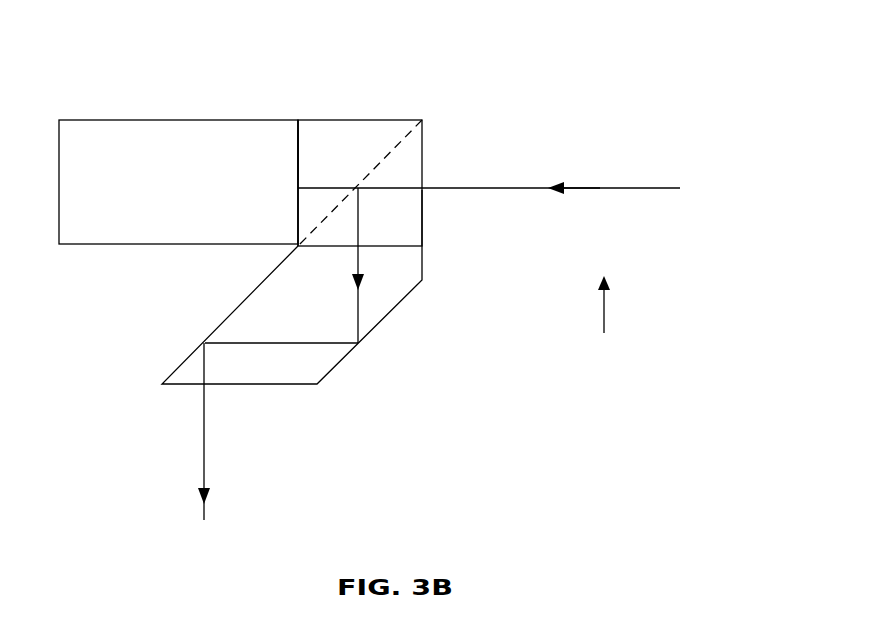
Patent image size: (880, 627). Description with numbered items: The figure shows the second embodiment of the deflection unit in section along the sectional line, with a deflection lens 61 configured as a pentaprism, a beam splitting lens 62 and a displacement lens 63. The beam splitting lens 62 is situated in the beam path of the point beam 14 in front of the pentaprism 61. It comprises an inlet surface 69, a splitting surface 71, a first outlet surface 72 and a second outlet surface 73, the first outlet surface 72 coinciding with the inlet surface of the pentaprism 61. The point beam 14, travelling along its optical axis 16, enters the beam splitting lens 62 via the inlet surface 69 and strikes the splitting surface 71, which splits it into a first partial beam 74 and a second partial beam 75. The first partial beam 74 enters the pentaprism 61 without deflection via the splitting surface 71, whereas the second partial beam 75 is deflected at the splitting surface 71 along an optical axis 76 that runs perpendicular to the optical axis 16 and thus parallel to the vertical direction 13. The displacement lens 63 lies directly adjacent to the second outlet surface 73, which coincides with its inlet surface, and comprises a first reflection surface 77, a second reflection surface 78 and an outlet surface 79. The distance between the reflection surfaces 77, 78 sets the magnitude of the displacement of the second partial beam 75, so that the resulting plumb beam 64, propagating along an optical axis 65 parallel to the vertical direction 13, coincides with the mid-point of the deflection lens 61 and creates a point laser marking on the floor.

The vertical direction 13 is at (605, 307).
The point beam 14 is at (630, 189).
The optical axis of the point beam 16 is at (573, 189).
The deflection lens 61 is at (110, 135).
The beam splitting lens 62 is at (410, 152).
The displacement lens 63 is at (256, 322).
The plumb beam 64 is at (203, 427).
The optical axis of the plumb beam 65 is at (203, 482).
The inlet surface 69 is at (424, 216).
The splitting surface 71 is at (398, 138).
The first outlet surface 72 is at (296, 158).
The second outlet surface 73 is at (322, 250).
The first partial beam 74 is at (320, 145).
The second partial beam 75 is at (350, 213).
The optical axis of the second partial beam 76 is at (359, 266).
The first reflection surface 77 is at (373, 336).
The second reflection surface 78 is at (182, 359).
The outlet surface 79 is at (262, 388).